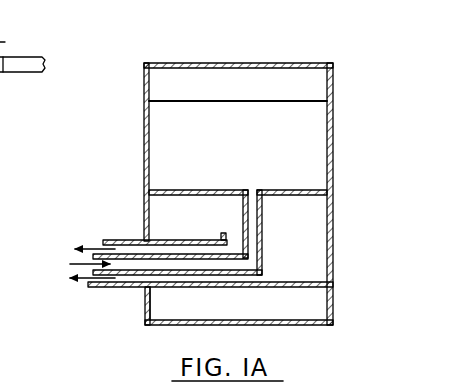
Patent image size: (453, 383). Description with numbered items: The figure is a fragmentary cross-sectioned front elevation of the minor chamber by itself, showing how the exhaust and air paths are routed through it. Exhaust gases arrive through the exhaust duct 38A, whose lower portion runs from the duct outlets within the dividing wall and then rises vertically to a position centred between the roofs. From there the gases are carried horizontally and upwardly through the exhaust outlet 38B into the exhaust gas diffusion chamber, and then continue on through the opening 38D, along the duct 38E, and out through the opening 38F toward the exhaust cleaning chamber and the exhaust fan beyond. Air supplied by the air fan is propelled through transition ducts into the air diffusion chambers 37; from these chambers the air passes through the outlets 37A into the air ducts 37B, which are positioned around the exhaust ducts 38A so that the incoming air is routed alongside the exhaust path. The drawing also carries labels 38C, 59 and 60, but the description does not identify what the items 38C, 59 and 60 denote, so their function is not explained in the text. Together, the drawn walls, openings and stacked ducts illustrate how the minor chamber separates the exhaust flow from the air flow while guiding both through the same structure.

The air diffusion chamber 37 is at (152, 209).
The outlet 37A is at (233, 230).
The air duct 37B is at (99, 248).
The exhaust duct 38A is at (93, 263).
The exhaust outlet 38B is at (254, 186).
The side wall 38C is at (170, 129).
The opening 38D is at (217, 98).
The duct 38E is at (255, 72).
The opening 38F is at (296, 306).
The pipe 59 is at (22, 82).
The fitting 60 is at (3, 42).